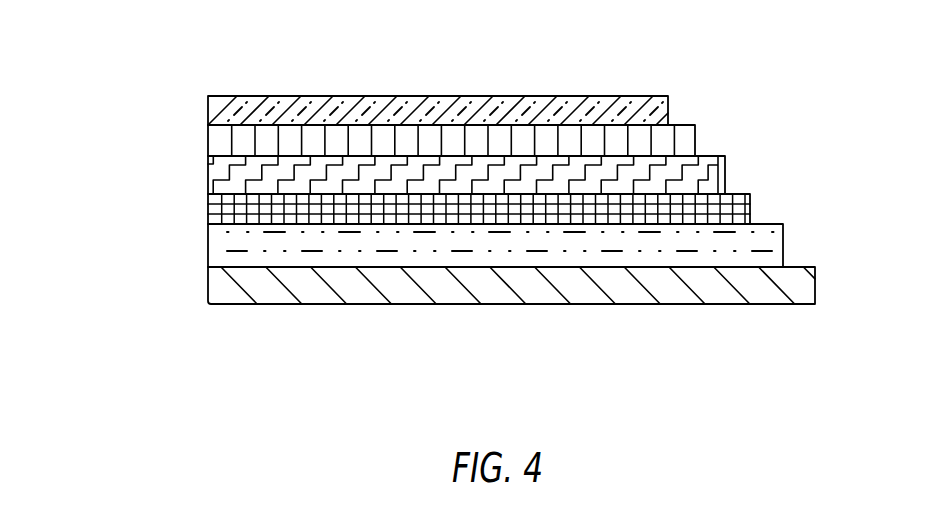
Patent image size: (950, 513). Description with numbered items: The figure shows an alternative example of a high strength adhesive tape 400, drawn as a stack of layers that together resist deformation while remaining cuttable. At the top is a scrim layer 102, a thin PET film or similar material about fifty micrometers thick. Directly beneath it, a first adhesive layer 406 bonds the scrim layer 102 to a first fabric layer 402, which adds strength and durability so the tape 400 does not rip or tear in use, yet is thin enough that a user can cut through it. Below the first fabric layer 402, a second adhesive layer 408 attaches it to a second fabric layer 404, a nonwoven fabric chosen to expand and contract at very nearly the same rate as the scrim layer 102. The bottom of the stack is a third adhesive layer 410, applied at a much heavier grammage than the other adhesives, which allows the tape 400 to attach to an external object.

The high strength adhesive tape 400 is at (113, 83).
The scrim layer 102 is at (652, 110).
The first adhesive layer 406 is at (245, 142).
The first fabric layer 402 is at (700, 172).
The second adhesive layer 408 is at (217, 212).
The second fabric layer 404 is at (748, 238).
The third adhesive layer 410 is at (222, 288).